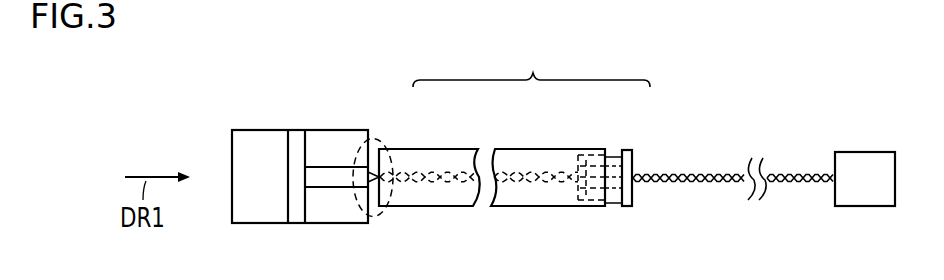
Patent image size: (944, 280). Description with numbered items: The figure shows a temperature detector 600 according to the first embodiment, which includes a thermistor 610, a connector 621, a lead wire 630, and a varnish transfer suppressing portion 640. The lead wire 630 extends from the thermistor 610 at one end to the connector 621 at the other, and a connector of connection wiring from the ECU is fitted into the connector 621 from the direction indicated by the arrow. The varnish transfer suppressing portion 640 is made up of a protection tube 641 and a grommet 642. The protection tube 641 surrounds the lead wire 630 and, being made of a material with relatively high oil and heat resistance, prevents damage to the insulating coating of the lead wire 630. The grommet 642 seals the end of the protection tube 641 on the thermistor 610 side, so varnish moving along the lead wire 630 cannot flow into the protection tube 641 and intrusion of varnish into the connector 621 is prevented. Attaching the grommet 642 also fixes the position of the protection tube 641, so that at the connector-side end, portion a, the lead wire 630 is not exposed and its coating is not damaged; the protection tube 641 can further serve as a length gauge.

The temperature detector 600 is at (798, 123).
The thermistor 610 is at (865, 193).
The connector 621 is at (261, 152).
The lead wire 630 is at (700, 175).
The varnish transfer suppressing portion 640 is at (531, 65).
The protection tube 641 is at (438, 162).
The grommet 642 is at (623, 150).
The portion a is at (384, 140).